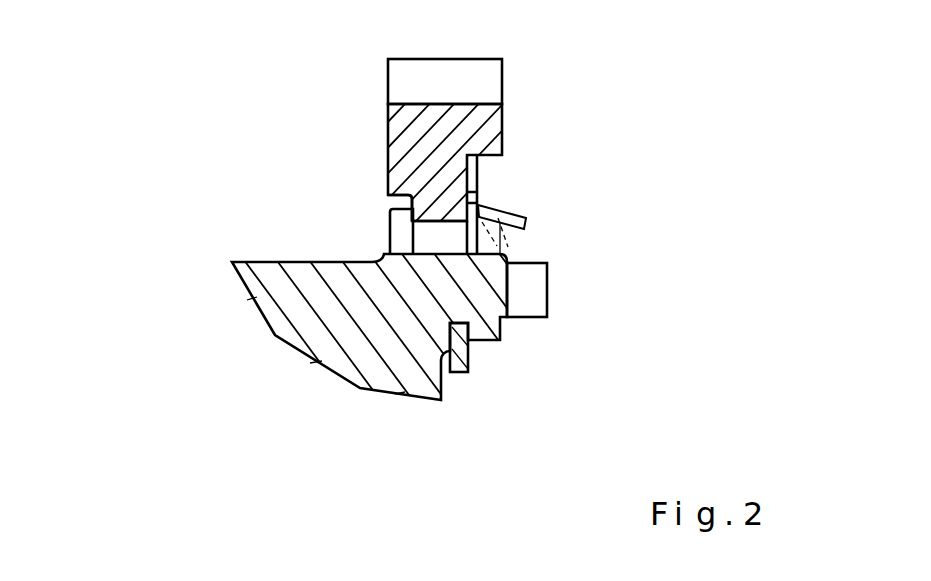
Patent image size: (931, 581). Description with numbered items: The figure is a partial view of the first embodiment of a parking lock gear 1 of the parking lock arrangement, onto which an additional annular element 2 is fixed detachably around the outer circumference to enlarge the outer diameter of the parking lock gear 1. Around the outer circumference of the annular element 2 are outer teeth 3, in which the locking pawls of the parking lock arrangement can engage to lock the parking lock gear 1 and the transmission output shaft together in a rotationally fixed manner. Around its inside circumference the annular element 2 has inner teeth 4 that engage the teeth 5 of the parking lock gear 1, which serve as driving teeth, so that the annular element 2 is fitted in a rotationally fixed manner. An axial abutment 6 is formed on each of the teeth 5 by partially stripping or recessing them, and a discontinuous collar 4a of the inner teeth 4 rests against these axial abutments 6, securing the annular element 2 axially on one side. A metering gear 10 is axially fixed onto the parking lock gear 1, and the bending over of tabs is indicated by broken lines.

The parking lock gear 1 is at (365, 348).
The annular element 2 is at (467, 137).
The outer teeth 3 is at (467, 80).
The inner teeth 4 is at (437, 203).
The collar 4a is at (410, 203).
The teeth 5 is at (402, 238).
The axial abutment 6 is at (403, 217).
The metering gear 10 is at (523, 287).